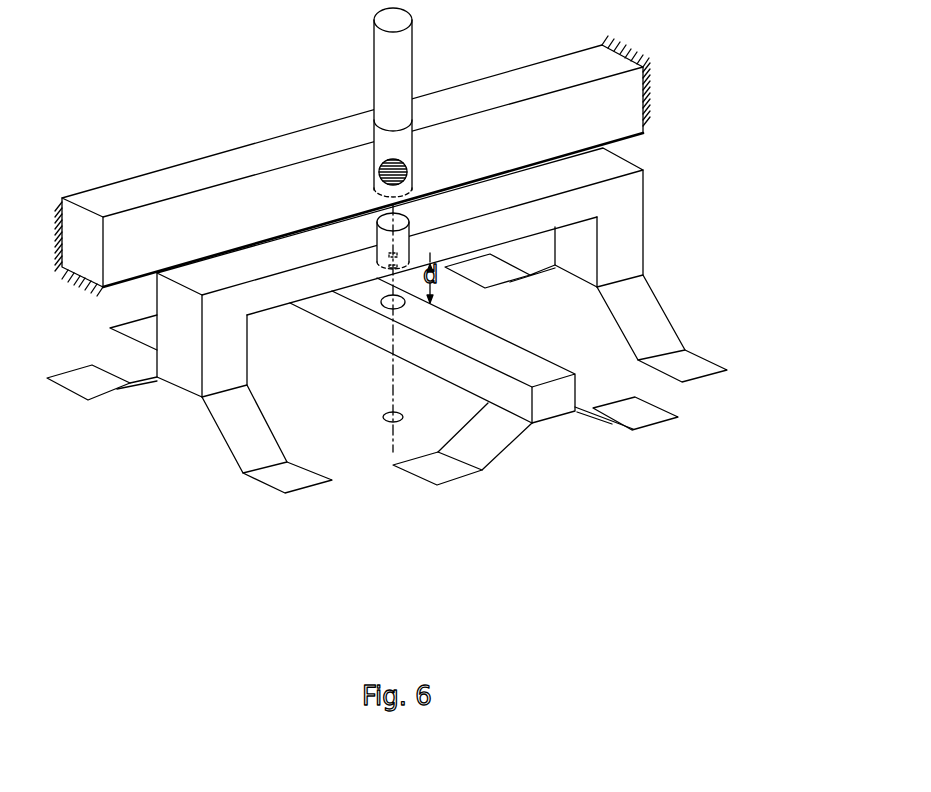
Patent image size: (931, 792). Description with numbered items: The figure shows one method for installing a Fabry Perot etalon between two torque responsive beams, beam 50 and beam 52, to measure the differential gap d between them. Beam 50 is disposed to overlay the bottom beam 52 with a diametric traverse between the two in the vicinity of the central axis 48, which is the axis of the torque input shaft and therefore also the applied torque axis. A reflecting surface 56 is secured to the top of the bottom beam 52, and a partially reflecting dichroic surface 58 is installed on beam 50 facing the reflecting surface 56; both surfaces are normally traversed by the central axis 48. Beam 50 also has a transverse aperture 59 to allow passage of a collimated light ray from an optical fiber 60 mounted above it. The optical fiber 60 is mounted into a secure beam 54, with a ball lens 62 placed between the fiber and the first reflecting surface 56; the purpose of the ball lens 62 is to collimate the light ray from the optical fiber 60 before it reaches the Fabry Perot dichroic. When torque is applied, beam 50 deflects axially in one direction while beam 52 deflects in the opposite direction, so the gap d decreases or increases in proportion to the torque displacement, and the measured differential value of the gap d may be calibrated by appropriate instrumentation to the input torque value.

The central axis 48 is at (383, 417).
The beam 50 is at (635, 236).
The beam 52 is at (387, 352).
The secure beam 54 is at (522, 150).
The reflecting surface 56 is at (405, 306).
The partially reflecting dichroic surface 58 is at (378, 264).
The transverse aperture 59 is at (410, 221).
The optical fiber 60 is at (412, 50).
The ball lens 62 is at (379, 172).